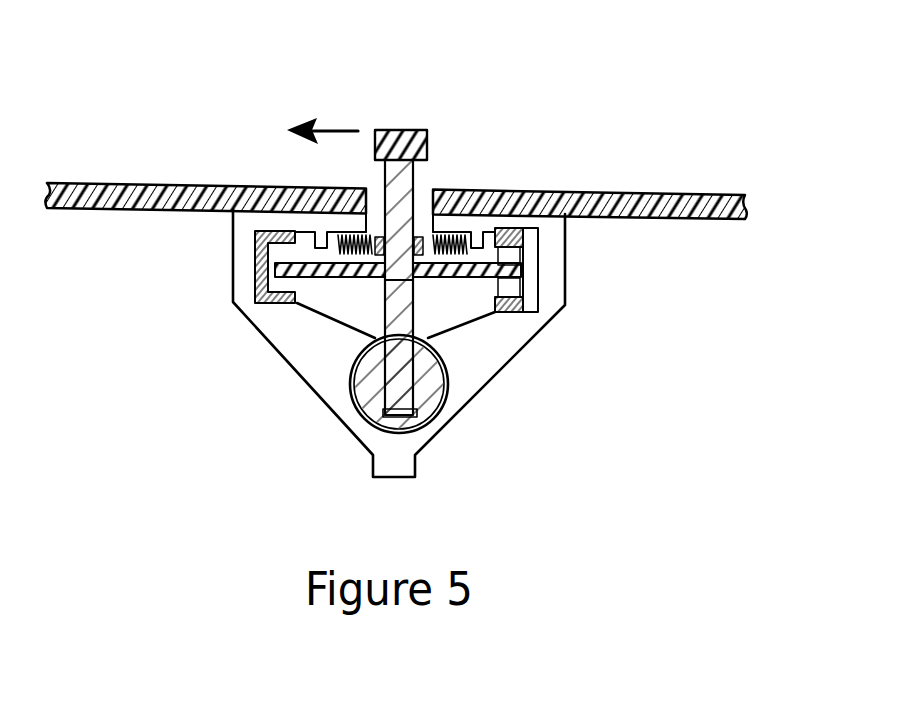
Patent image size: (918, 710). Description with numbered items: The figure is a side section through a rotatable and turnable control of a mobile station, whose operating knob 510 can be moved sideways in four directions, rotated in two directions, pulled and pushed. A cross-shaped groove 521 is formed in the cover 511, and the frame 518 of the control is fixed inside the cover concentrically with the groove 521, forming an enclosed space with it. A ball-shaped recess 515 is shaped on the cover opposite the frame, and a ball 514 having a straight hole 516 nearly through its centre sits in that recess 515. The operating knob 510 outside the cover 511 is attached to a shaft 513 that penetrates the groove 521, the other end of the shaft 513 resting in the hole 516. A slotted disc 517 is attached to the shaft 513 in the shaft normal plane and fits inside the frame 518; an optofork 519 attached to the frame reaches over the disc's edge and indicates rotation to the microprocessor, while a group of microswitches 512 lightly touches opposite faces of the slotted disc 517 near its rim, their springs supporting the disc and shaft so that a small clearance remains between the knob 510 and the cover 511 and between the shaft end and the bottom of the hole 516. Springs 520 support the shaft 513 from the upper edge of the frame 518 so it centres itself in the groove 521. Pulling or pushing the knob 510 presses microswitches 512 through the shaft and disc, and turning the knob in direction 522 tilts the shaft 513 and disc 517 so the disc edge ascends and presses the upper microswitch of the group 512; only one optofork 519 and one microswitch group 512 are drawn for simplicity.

The operating knob 510 is at (427, 133).
The cover 511 is at (635, 212).
The microswitches 512 is at (525, 241).
The shaft 513 is at (395, 288).
The ball 514 is at (428, 377).
The ball-shaped recess 515 is at (443, 403).
The hole 516 is at (377, 413).
The slotted disc 517 is at (323, 270).
The frame 518 is at (243, 288).
The optofork 519 is at (250, 233).
The springs 520 is at (343, 230).
The groove 521 is at (378, 198).
The direction 522 is at (320, 126).